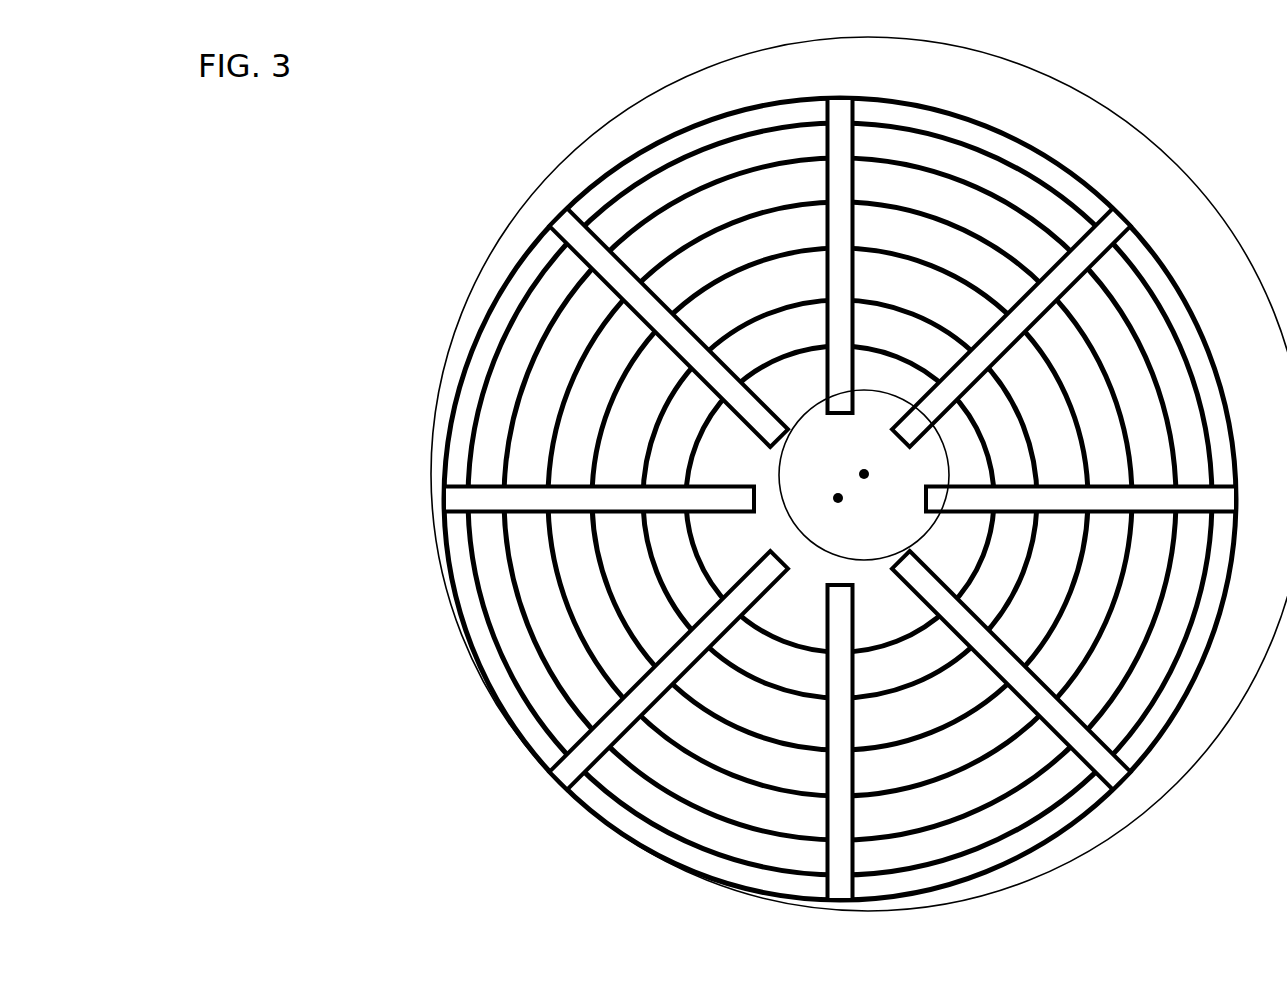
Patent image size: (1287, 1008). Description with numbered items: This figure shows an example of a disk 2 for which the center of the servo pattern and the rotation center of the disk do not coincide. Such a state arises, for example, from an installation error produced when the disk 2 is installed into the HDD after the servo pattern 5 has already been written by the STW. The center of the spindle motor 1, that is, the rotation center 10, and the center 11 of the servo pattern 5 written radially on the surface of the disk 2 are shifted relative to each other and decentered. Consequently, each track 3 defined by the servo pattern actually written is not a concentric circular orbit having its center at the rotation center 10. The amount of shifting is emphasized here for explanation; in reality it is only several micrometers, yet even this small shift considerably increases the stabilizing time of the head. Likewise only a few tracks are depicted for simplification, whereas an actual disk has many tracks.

The spindle motor 1 is at (928, 532).
The disk 2 is at (1173, 165).
The track 3 is at (977, 413).
The servo pattern 5 is at (840, 499).
The rotation center 10 is at (867, 477).
The center of the servo pattern 11 is at (836, 497).